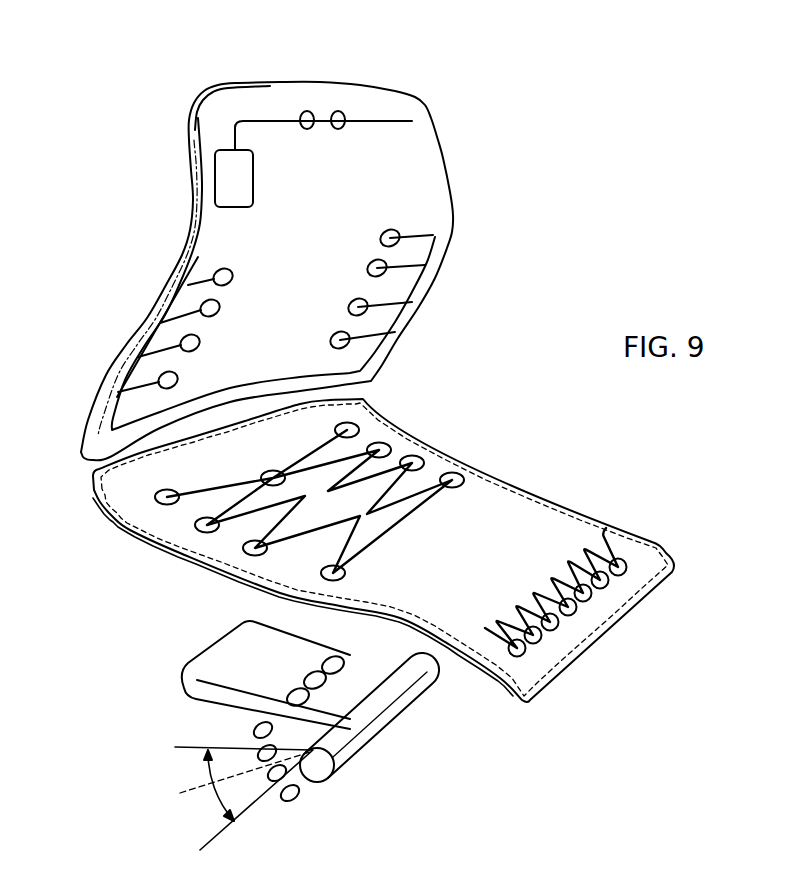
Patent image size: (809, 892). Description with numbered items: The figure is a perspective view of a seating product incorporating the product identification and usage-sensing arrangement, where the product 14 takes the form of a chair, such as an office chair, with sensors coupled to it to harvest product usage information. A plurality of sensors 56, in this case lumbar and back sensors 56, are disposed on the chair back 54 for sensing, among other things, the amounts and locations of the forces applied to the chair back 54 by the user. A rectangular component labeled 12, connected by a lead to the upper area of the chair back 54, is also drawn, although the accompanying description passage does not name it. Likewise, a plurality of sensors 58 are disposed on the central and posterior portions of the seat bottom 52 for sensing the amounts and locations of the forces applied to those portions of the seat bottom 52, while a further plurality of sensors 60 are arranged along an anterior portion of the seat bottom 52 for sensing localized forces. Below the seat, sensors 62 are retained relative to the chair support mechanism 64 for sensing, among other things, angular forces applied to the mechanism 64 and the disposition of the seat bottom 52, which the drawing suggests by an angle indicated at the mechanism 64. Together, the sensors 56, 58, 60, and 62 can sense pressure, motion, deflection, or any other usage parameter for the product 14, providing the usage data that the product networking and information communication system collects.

The connector 12 is at (215, 177).
The product 14 is at (638, 203).
The seat bottom 52 is at (547, 497).
The chair back 54 is at (181, 252).
The sensors 56 is at (398, 233).
The sensors 58 is at (445, 476).
The sensors 60 is at (625, 563).
The sensors 62 is at (300, 800).
The chair support mechanism 64 is at (180, 674).